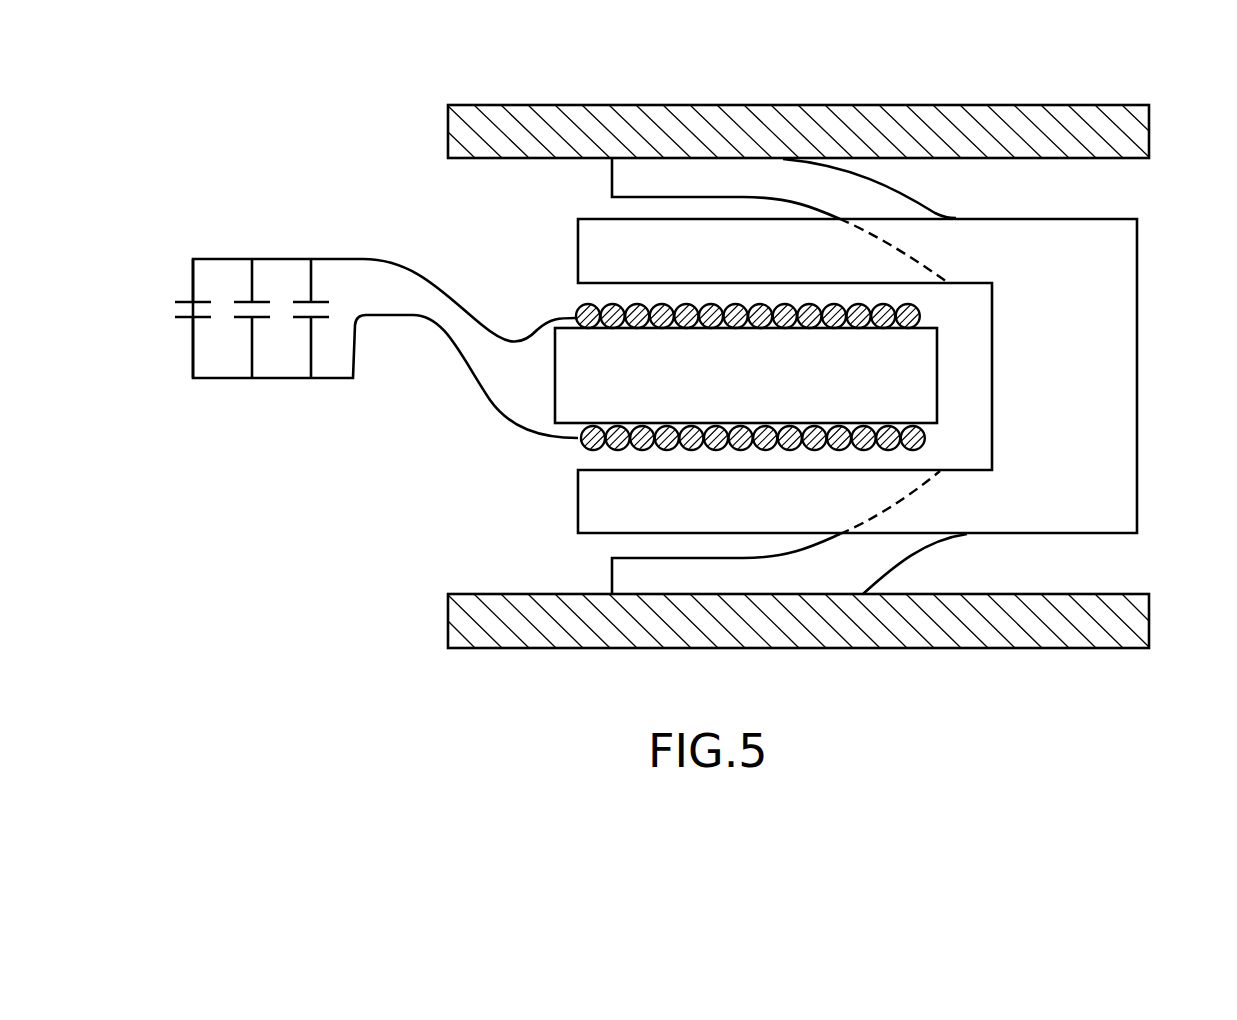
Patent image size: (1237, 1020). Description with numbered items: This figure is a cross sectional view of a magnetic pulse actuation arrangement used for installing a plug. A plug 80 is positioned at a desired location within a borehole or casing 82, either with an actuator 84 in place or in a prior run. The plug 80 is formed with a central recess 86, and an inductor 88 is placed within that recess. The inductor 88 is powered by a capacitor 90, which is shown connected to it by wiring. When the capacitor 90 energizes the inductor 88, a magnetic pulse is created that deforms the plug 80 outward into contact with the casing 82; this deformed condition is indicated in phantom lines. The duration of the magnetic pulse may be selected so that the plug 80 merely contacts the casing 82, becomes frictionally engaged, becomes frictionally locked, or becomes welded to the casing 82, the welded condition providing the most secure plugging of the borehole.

The plug 80 is at (1117, 318).
The casing 82 is at (1133, 133).
The actuator 84 is at (540, 451).
The central recess 86 is at (900, 468).
The inductor 88 is at (813, 445).
The capacitor 90 is at (252, 378).